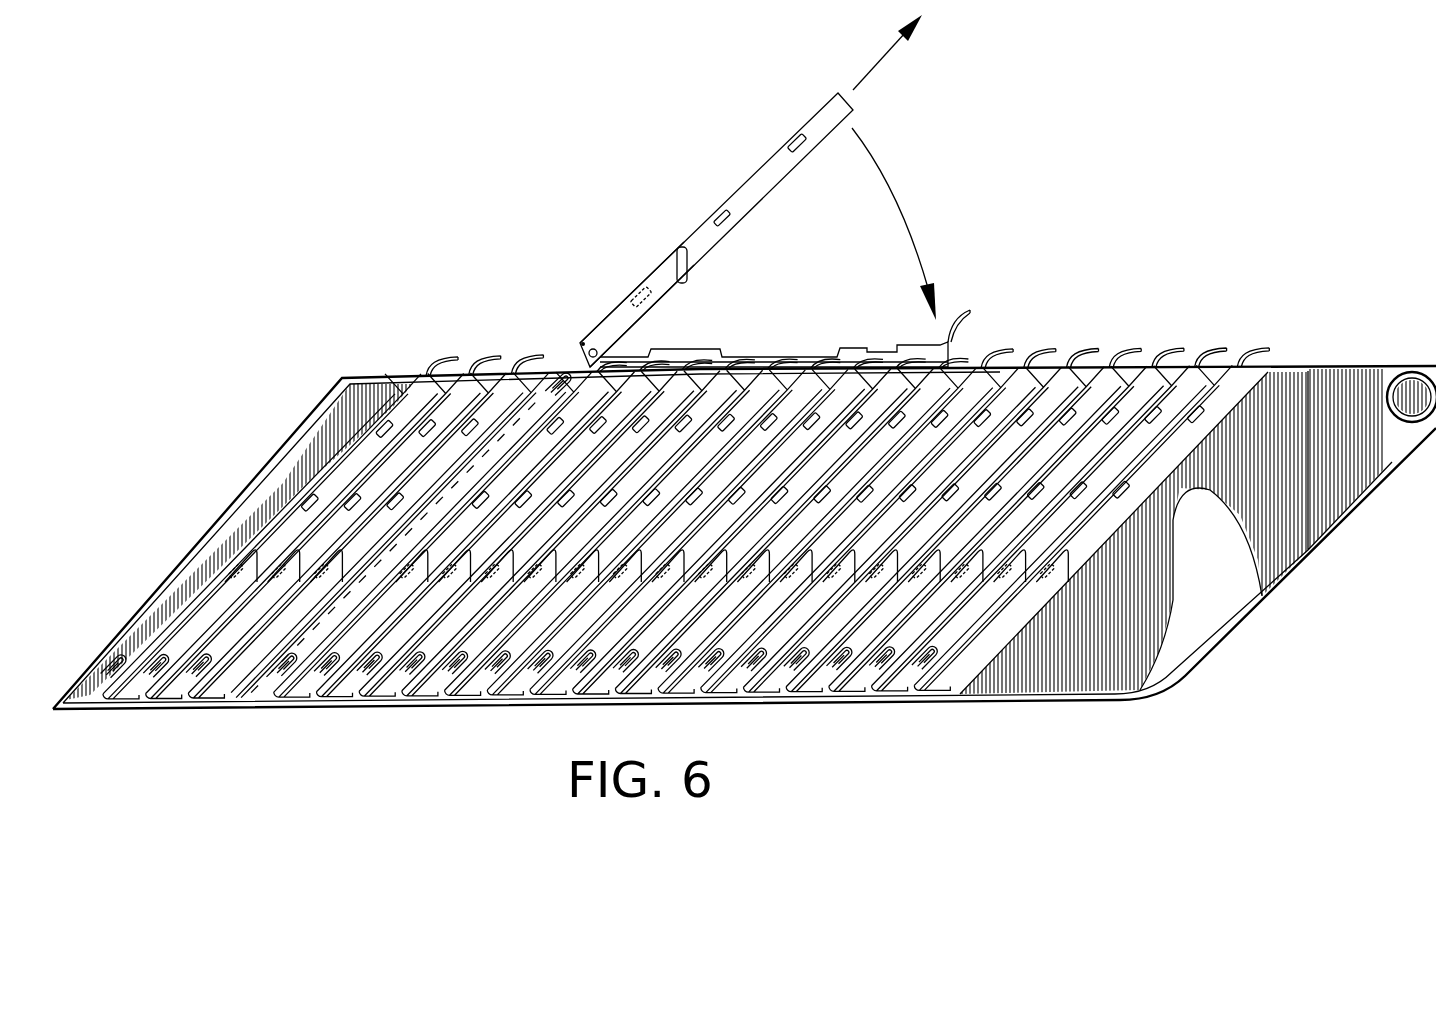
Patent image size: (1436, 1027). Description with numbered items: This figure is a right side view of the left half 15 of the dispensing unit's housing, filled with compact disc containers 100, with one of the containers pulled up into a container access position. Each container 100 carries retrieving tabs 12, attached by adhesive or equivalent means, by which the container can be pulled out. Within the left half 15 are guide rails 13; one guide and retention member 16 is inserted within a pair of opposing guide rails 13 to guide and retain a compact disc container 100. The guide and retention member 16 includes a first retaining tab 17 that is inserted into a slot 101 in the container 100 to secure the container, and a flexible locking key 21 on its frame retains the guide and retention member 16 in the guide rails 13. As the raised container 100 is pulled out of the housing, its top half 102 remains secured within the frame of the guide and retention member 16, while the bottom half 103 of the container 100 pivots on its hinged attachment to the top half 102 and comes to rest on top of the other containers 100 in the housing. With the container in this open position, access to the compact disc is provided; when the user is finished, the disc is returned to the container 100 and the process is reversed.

The retrieving tab 12 is at (955, 316).
The guide rail 13 is at (633, 320).
The left half 15 is at (1385, 370).
The guide and retention member 16 is at (641, 261).
The first retaining tab 17 is at (1047, 575).
The flexible locking key 21 is at (549, 370).
The compact disc container 100 is at (722, 174).
The slot 101 is at (1005, 580).
The top half 102 is at (812, 118).
The bottom half 103 is at (851, 343).